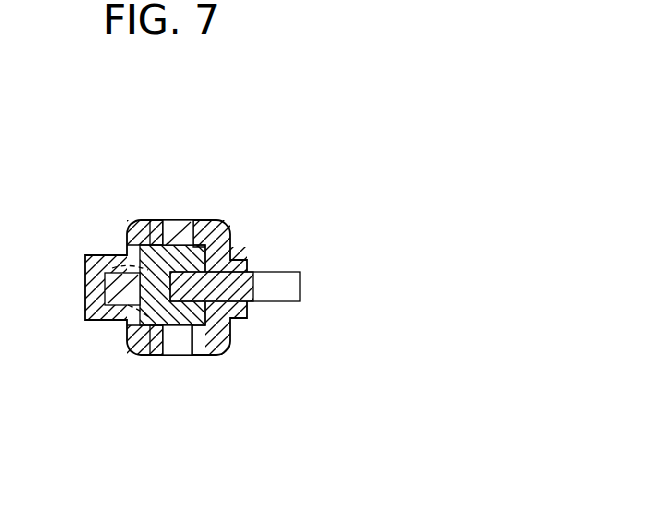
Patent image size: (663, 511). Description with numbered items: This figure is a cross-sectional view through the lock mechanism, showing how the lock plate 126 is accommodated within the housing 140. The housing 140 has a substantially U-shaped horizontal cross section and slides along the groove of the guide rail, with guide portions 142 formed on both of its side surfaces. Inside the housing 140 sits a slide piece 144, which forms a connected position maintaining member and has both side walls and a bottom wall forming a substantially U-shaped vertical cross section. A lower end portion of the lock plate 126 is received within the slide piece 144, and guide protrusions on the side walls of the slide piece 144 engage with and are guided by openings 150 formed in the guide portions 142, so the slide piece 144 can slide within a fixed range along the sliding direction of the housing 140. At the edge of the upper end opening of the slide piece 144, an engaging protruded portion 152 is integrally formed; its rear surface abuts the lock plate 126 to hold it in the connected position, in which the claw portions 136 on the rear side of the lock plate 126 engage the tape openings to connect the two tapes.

The housing 140 is at (217, 217).
The guide portions 142 is at (150, 217).
The slide piece 144 is at (196, 330).
The openings 150 is at (180, 218).
The claw portions 136 is at (283, 279).
The engaging protruded portion 152 is at (118, 312).
The lock plate 126 is at (267, 302).